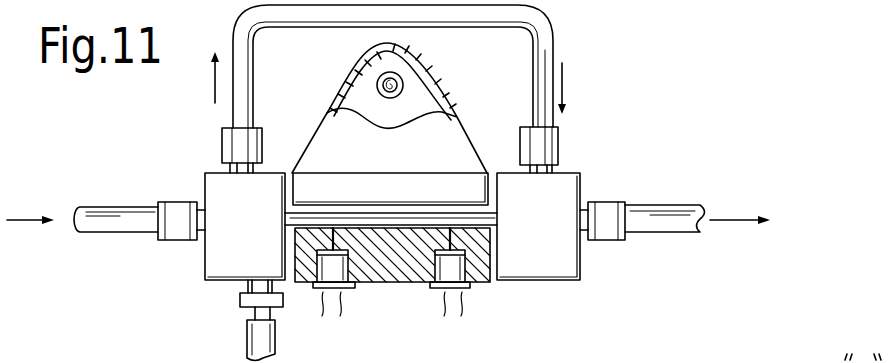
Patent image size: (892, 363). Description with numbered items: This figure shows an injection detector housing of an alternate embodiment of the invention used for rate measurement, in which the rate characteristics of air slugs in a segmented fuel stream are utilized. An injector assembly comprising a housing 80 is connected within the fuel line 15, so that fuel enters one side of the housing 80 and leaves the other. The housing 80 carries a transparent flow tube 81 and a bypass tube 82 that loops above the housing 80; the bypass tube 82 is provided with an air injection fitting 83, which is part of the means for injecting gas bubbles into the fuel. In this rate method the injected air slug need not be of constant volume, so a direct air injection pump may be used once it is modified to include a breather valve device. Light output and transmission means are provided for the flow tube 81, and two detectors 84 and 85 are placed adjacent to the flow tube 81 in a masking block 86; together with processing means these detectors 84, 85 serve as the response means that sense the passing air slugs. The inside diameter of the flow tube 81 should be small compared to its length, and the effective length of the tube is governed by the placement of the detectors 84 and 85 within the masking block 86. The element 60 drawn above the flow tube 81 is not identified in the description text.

The fuel line 15 is at (108, 235).
The sensing element 60 is at (415, 62).
The housing 80 is at (211, 165).
The transparent flow tube 81 is at (328, 213).
The bypass tube 82 is at (536, 18).
The air injection fitting 83 is at (240, 300).
The detector 84 is at (357, 292).
The detector 85 is at (473, 292).
The masking block 86 is at (409, 283).